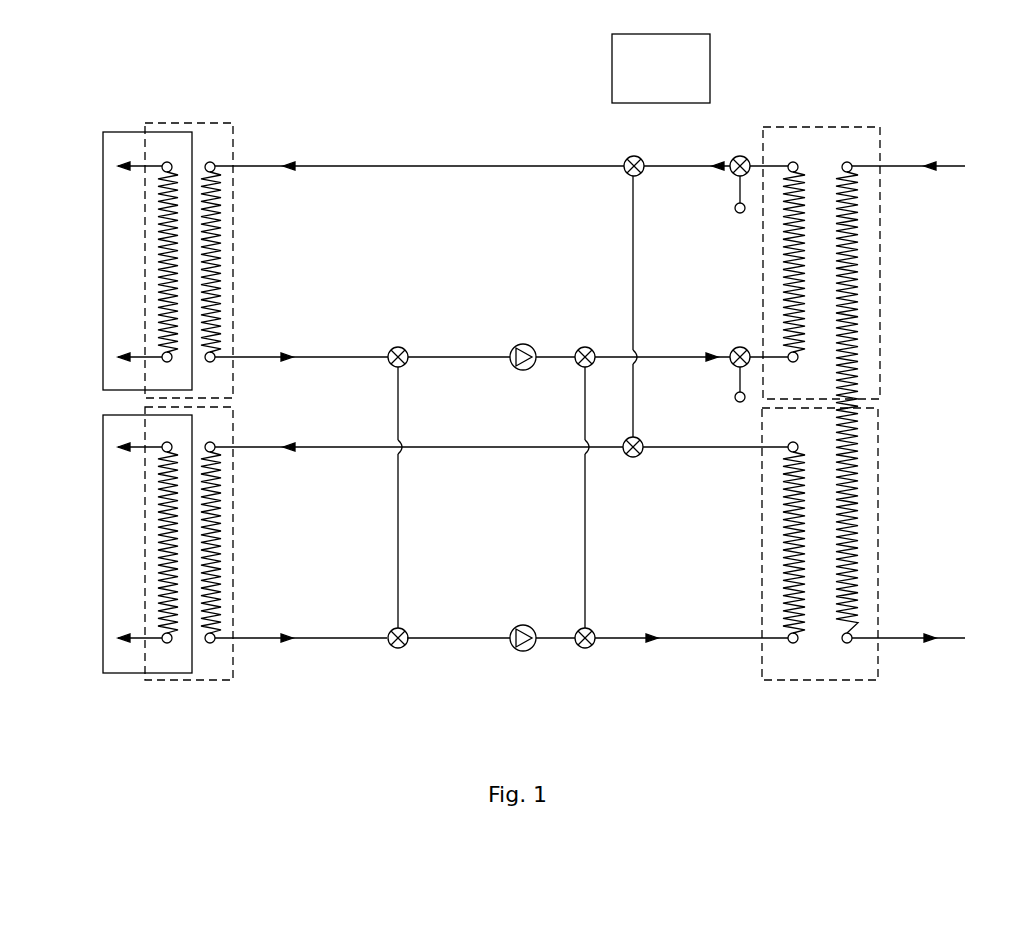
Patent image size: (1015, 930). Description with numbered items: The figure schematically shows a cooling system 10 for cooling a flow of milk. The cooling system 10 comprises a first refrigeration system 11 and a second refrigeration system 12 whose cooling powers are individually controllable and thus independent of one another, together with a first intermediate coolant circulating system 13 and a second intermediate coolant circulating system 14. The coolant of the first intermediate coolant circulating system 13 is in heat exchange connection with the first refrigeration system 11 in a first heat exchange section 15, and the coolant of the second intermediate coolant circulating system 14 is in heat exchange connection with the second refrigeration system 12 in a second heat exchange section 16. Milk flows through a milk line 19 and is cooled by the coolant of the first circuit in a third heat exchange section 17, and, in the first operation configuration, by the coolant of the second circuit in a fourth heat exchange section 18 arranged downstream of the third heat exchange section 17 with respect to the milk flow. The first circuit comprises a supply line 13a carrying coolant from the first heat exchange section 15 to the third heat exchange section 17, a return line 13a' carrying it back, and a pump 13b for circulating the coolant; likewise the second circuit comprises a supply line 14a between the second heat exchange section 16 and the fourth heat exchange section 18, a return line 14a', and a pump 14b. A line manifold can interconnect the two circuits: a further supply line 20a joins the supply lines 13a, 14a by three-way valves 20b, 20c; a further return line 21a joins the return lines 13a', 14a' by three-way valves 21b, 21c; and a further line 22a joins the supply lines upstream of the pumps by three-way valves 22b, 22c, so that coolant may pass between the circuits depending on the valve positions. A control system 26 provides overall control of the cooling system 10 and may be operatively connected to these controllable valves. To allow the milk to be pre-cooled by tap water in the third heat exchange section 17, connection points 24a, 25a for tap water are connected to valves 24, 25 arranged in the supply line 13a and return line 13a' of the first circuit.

The cooling system 10 is at (349, 118).
The first refrigeration system 11 is at (112, 132).
The second refrigeration system 12 is at (115, 673).
The first intermediate coolant circulating system 13 is at (453, 225).
The supply line 13a is at (453, 327).
The return line 13a' is at (453, 193).
The pump 13b is at (523, 344).
The second intermediate coolant circulating system 14 is at (453, 591).
The supply line 14a is at (453, 662).
The return line 14a' is at (453, 472).
The pump 14b is at (525, 626).
The first heat exchange section 15 is at (190, 123).
The second heat exchange section 16 is at (195, 680).
The third heat exchange section 17 is at (829, 127).
The fourth heat exchange section 18 is at (830, 680).
The milk line 19 is at (905, 166).
The further supply line 20a is at (586, 568).
The three-way valve 20b is at (590, 628).
The three-way valve 20c is at (580, 366).
The further return line 21a is at (632, 246).
The three-way valve 21b is at (637, 437).
The three-way valve 21c is at (627, 173).
The further line 22a is at (397, 560).
The three-way valve 22b is at (402, 628).
The three-way valve 22c is at (398, 347).
The valve 24 is at (734, 350).
The connection point 24a is at (737, 402).
The valve 25 is at (735, 174).
The connection point 25a is at (737, 213).
The control system 26 is at (710, 62).